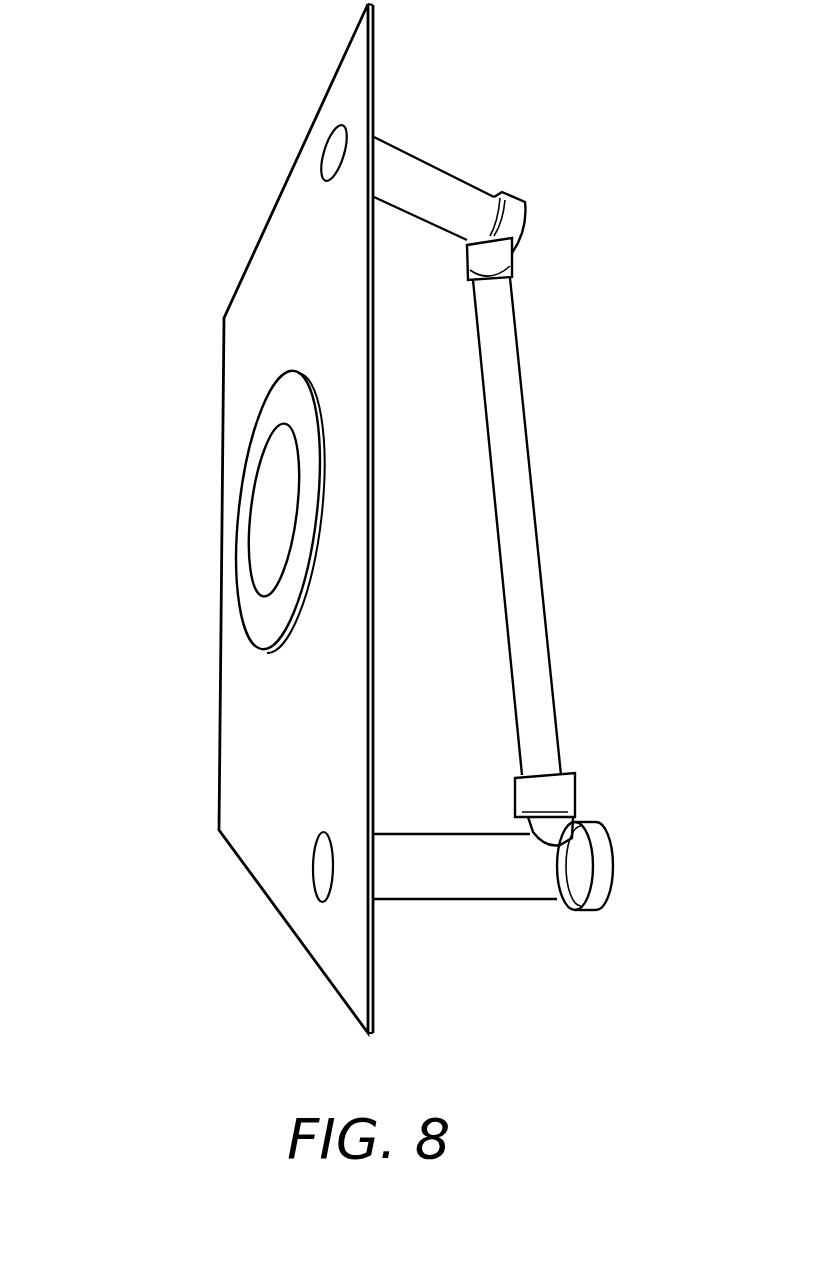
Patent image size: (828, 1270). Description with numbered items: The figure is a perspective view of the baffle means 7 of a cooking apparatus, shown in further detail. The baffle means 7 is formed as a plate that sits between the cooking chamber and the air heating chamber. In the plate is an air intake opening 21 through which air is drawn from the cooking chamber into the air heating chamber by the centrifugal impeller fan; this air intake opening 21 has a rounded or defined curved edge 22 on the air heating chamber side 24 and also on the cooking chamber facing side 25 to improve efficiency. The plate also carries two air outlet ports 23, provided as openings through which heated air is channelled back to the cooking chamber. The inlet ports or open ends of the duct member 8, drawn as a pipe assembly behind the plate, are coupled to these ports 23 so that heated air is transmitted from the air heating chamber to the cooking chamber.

The baffle means 7 is at (329, 516).
The duct member 8 is at (462, 178).
The air intake opening 21 is at (272, 503).
The curved edge 22 is at (250, 587).
The air outlet ports 23 is at (333, 147).
The air heating chamber side 24 is at (294, 728).
The cooking chamber facing side 25 is at (375, 304).